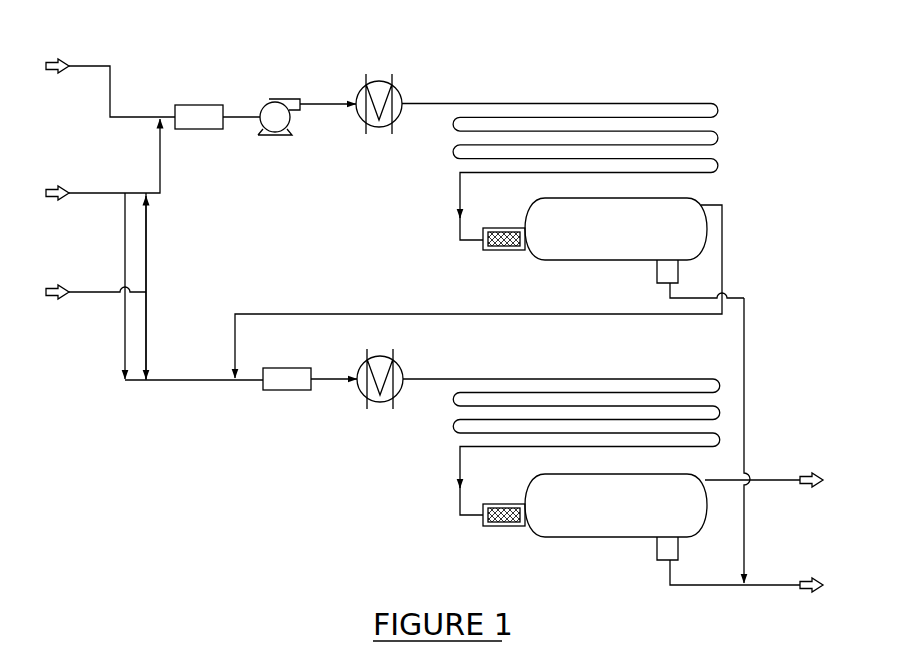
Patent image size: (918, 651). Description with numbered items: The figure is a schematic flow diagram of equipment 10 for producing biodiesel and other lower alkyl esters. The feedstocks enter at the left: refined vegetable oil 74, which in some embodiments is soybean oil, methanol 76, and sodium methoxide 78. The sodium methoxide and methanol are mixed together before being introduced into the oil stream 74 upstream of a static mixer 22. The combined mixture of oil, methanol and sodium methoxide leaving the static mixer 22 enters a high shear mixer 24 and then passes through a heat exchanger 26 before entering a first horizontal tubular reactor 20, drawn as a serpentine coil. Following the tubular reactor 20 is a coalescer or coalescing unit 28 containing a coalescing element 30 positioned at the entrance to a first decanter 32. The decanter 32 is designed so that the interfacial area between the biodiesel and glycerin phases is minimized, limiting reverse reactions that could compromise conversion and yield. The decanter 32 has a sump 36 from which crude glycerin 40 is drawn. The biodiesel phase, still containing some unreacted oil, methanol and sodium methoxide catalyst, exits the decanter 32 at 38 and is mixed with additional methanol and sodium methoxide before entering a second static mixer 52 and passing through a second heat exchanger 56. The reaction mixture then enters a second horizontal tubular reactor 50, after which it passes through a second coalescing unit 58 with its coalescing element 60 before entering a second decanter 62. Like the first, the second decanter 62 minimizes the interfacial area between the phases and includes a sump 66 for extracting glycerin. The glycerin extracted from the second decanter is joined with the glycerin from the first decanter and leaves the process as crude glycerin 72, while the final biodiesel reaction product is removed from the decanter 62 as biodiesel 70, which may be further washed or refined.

The flow diagram of equipment 10 is at (277, 518).
The tubular reactor 20 is at (549, 97).
The static mixer 22 is at (192, 103).
The high shear mixer 24 is at (277, 98).
The heat exchanger 26 is at (375, 129).
The coalescer or coalescing unit 28 is at (516, 252).
The coalescing element 30 is at (497, 240).
The decanter 32 is at (629, 196).
The sump 36 is at (655, 275).
The biodiesel phase exit 38 is at (725, 212).
The crude glycerin 40 is at (749, 309).
The tubular reactor 50 is at (552, 371).
The static mixer 52 is at (287, 393).
The heat exchanger 56 is at (378, 406).
The coalescing unit 58 is at (516, 528).
The coalescing element 60 is at (497, 516).
The decanter 62 is at (630, 472).
The sump 66 is at (655, 553).
The biodiesel 70 is at (788, 482).
The crude glycerin 72 is at (804, 587).
The refined vegetable oil 74 is at (100, 76).
The methanol 76 is at (86, 249).
The sodium methoxide 78 is at (73, 280).